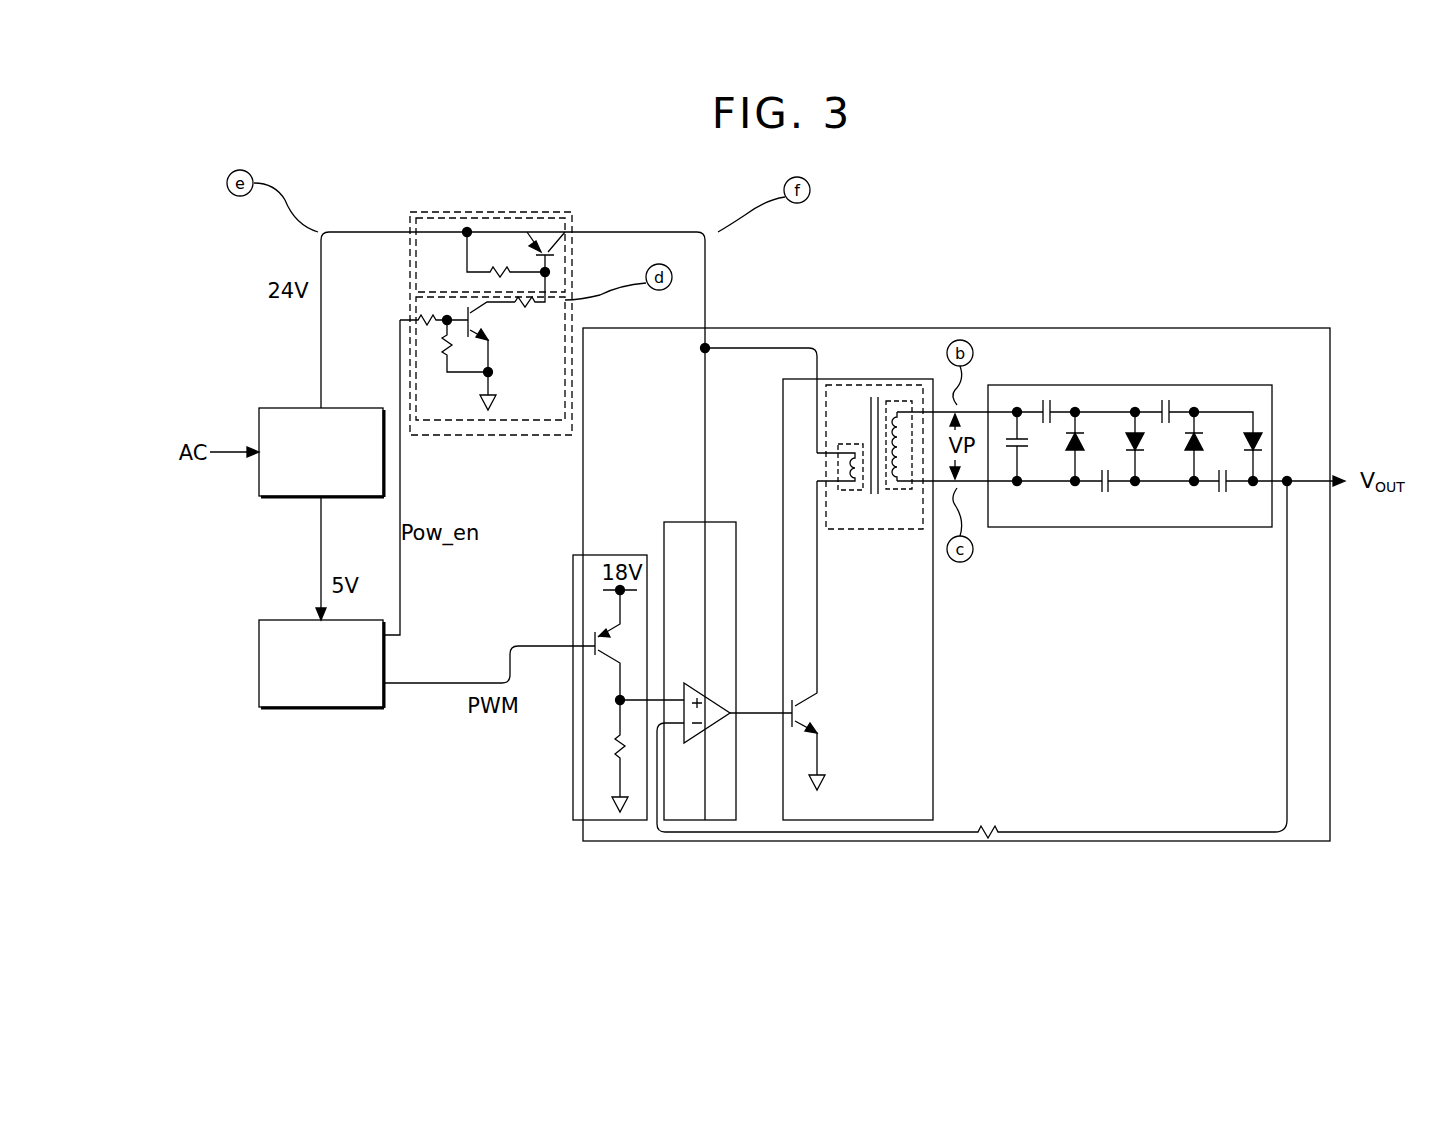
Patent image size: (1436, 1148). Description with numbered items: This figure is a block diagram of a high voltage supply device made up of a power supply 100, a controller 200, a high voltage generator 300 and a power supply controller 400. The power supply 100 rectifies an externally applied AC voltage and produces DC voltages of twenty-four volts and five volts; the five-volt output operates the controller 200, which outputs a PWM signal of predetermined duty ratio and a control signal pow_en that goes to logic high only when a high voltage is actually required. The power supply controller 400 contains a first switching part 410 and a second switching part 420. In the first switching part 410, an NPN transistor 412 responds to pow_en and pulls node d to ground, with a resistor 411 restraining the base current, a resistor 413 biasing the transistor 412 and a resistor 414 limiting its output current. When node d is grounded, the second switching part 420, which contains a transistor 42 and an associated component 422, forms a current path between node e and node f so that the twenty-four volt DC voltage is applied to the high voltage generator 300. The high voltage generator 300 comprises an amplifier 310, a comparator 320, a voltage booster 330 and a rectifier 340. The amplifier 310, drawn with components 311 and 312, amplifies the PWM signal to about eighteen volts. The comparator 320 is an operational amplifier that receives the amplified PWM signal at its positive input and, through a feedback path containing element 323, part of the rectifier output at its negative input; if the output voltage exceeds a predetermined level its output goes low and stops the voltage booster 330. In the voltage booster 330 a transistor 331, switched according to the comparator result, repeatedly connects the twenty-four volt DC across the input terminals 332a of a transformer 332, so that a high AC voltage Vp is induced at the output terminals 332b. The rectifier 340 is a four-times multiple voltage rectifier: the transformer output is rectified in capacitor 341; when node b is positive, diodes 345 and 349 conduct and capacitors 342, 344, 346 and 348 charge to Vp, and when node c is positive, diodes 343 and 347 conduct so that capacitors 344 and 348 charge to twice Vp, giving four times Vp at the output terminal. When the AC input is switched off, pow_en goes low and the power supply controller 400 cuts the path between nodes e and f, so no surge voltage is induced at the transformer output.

The power supply 100 is at (280, 497).
The controller 200 is at (313, 708).
The high voltage generator 300 is at (1000, 328).
The amplifier 310 is at (610, 822).
The transistor 311 is at (598, 660).
The resistor 312 is at (618, 758).
The comparator 320 is at (953, 701).
The feedback resistor 323 is at (988, 845).
The voltage booster 330 is at (866, 822).
The transistor 331 is at (822, 704).
The transformer 332 is at (872, 383).
The input terminals of the transformer 332a is at (852, 490).
The output terminals of the transformer 332b is at (893, 401).
The rectifier 340 is at (1080, 528).
The capacitor 341 is at (1025, 450).
The capacitor 342 is at (1048, 405).
The diode 343 is at (1085, 441).
The capacitor 344 is at (1115, 490).
The diode 345 is at (1145, 453).
The capacitor 346 is at (1172, 402).
The diode 347 is at (1207, 442).
The capacitor 348 is at (1230, 490).
The diode 349 is at (1262, 442).
The power supply controller 400 is at (487, 212).
The first switching part 410 is at (570, 328).
The resistor 411 is at (412, 314).
The transistor 412 is at (480, 318).
The resistor 413 is at (440, 350).
The resistor 414 is at (527, 310).
The second switching part 420 is at (568, 252).
The transistor 42 is at (545, 232).
The resistor 422 is at (478, 278).